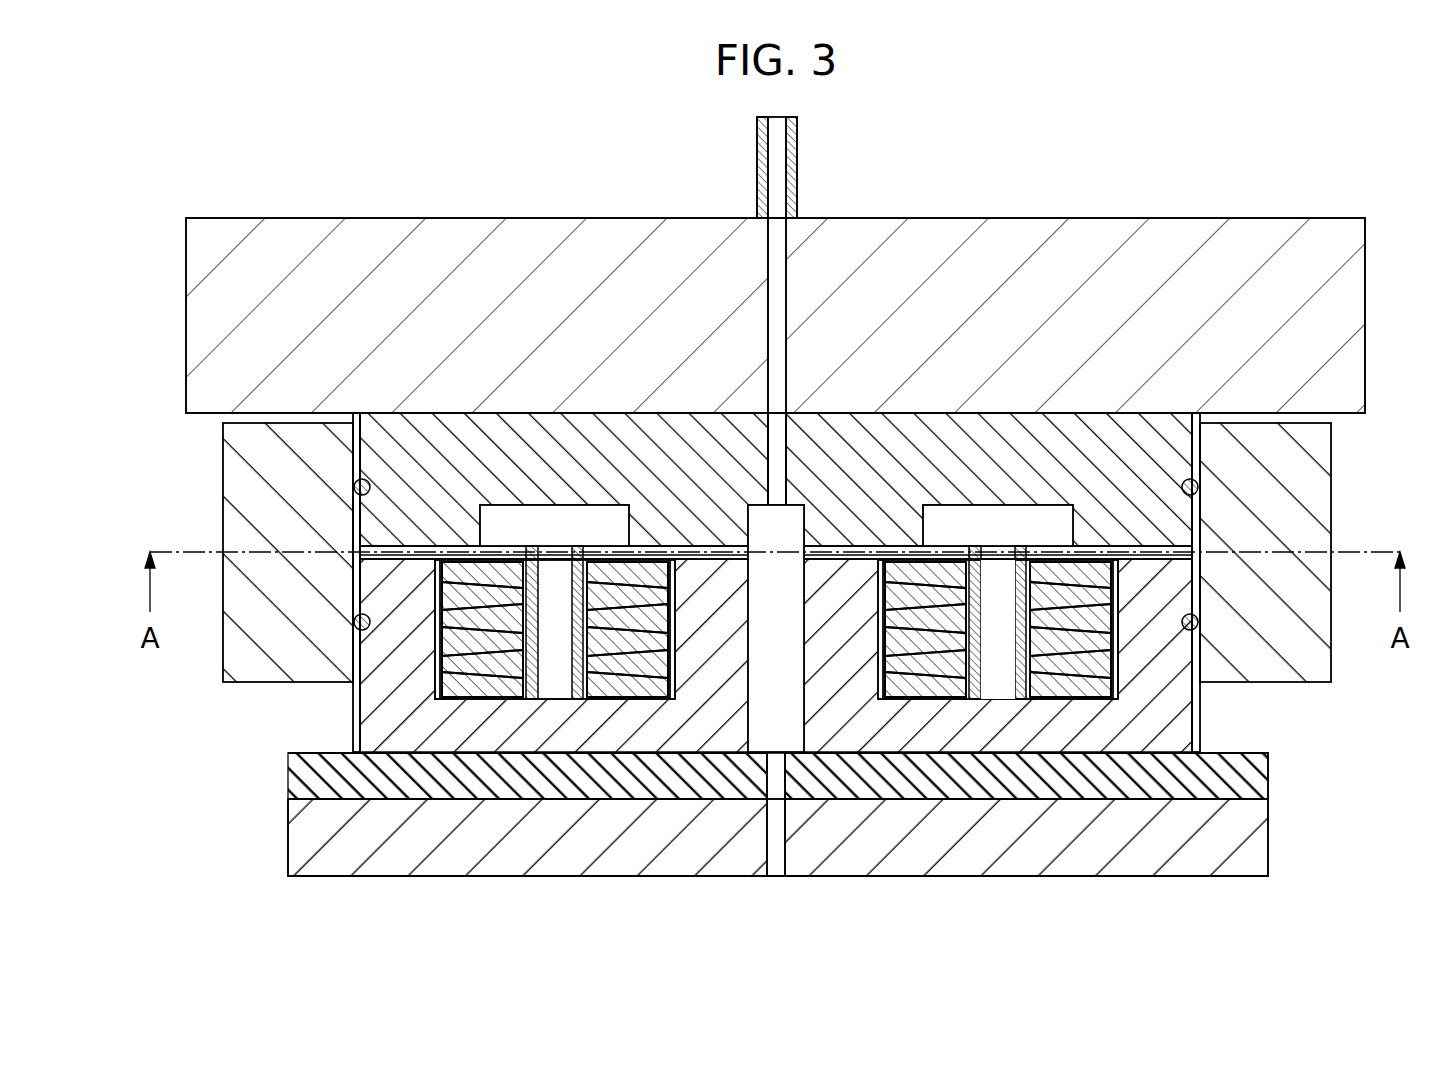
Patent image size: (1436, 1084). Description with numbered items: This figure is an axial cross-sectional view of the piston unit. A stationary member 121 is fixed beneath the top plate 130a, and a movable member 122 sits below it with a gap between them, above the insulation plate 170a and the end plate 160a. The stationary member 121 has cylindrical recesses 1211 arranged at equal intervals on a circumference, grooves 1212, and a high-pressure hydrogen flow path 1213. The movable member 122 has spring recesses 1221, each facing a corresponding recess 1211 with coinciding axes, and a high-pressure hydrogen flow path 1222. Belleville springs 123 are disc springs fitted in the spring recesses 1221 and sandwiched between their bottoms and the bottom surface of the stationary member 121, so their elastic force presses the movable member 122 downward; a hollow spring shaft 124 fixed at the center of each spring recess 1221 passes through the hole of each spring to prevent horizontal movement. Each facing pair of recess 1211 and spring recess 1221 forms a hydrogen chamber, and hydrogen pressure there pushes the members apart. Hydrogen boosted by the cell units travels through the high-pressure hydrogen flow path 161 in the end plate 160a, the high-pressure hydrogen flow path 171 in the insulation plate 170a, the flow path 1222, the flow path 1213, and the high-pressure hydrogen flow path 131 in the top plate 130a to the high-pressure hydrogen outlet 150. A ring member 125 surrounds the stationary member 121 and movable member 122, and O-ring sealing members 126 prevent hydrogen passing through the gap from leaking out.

The top plate 130a is at (1172, 238).
The high-pressure hydrogen outlet 150 is at (797, 140).
The high-pressure hydrogen flow path 131 is at (778, 265).
The stationary member 121 is at (1182, 452).
The grooves 1212 is at (695, 548).
The movable member 122 is at (1188, 740).
The high-pressure hydrogen flow path 1213 is at (778, 420).
The high-pressure hydrogen flow path 1222 is at (793, 738).
The recesses 1211 is at (510, 525).
The spring shafts 124 is at (1027, 540).
The spring recesses 1221 is at (998, 682).
The Belleville springs 123 is at (1193, 701).
The ring member 125 is at (1315, 650).
The sealing members 126 is at (1198, 490).
The insulation plate 170a is at (1270, 790).
The end plate 160a is at (1262, 850).
The high-pressure hydrogen flow path 171 is at (778, 788).
The high-pressure hydrogen flow path 161 is at (777, 855).